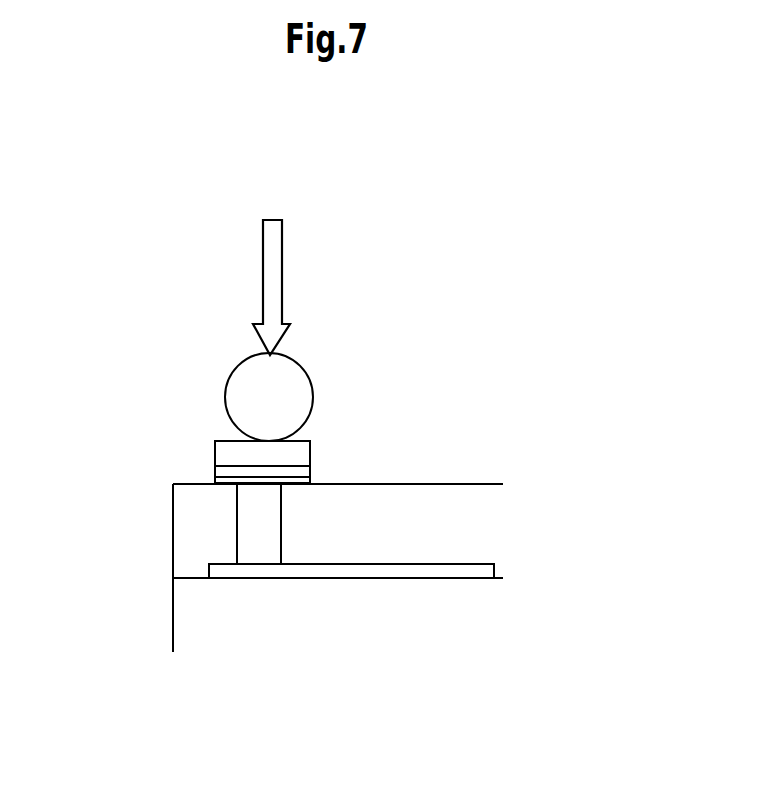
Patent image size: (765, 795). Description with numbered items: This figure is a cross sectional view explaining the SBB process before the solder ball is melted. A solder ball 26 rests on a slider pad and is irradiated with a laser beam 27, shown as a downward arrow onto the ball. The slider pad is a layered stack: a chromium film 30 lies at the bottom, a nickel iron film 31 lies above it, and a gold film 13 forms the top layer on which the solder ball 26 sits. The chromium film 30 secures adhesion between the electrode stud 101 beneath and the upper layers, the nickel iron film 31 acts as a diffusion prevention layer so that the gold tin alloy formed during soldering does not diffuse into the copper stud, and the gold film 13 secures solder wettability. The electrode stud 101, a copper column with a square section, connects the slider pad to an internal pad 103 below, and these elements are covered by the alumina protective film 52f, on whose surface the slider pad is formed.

The gold film 13 is at (227, 450).
The solder ball 26 is at (233, 374).
The laser beam 27 is at (288, 247).
The chromium film 30 is at (215, 478).
The nickel iron film 31 is at (215, 468).
The alumina protective film 52f is at (378, 500).
The electrode stud 101 is at (248, 517).
The internal pad 103 is at (468, 571).